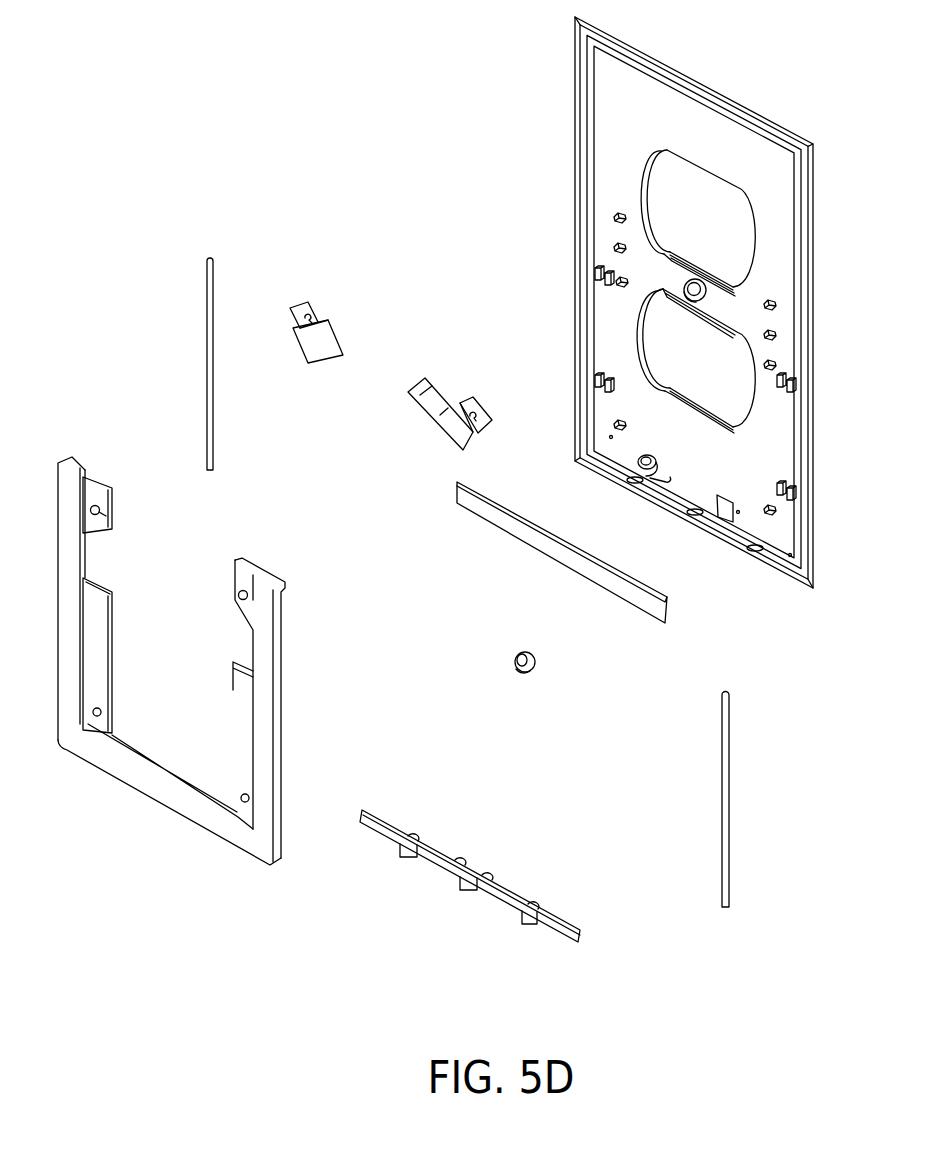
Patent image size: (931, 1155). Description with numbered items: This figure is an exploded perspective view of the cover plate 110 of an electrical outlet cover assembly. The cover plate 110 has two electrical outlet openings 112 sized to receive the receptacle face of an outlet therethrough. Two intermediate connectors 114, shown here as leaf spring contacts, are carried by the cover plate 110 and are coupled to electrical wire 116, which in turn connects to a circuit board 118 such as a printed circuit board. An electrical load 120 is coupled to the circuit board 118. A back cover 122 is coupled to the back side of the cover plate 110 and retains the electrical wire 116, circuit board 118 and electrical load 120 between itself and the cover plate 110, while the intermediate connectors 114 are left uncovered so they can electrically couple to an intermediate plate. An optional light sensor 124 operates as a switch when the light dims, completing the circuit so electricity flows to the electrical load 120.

The cover plate 110 is at (673, 127).
The electrical outlet opening 112 is at (708, 215).
The intermediate connectors 114 is at (447, 413).
The electrical wire 116 is at (208, 363).
The circuit board 118 is at (500, 522).
The electrical load 120 is at (467, 890).
The back cover 122 is at (148, 795).
The light sensor 124 is at (538, 657).